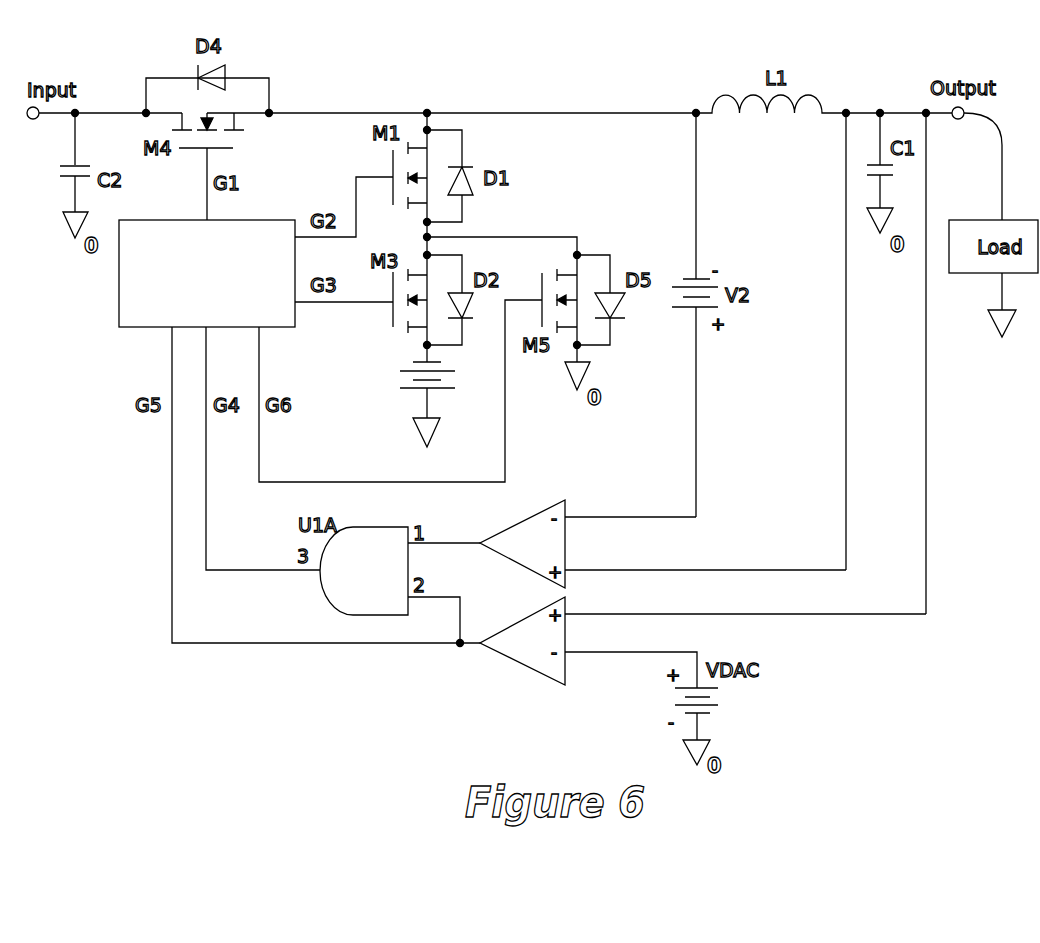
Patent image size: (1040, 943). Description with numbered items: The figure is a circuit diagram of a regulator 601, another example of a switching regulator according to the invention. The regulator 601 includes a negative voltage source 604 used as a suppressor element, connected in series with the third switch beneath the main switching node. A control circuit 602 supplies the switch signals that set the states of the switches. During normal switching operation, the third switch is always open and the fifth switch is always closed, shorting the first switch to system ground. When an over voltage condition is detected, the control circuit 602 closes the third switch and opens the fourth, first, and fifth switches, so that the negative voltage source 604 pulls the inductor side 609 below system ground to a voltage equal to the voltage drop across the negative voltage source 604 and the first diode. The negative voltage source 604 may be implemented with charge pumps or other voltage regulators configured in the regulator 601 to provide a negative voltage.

The regulator 601 is at (509, 94).
The control circuit 602 is at (178, 312).
The negative voltage source 604 is at (418, 388).
The inductor side 609 is at (696, 113).